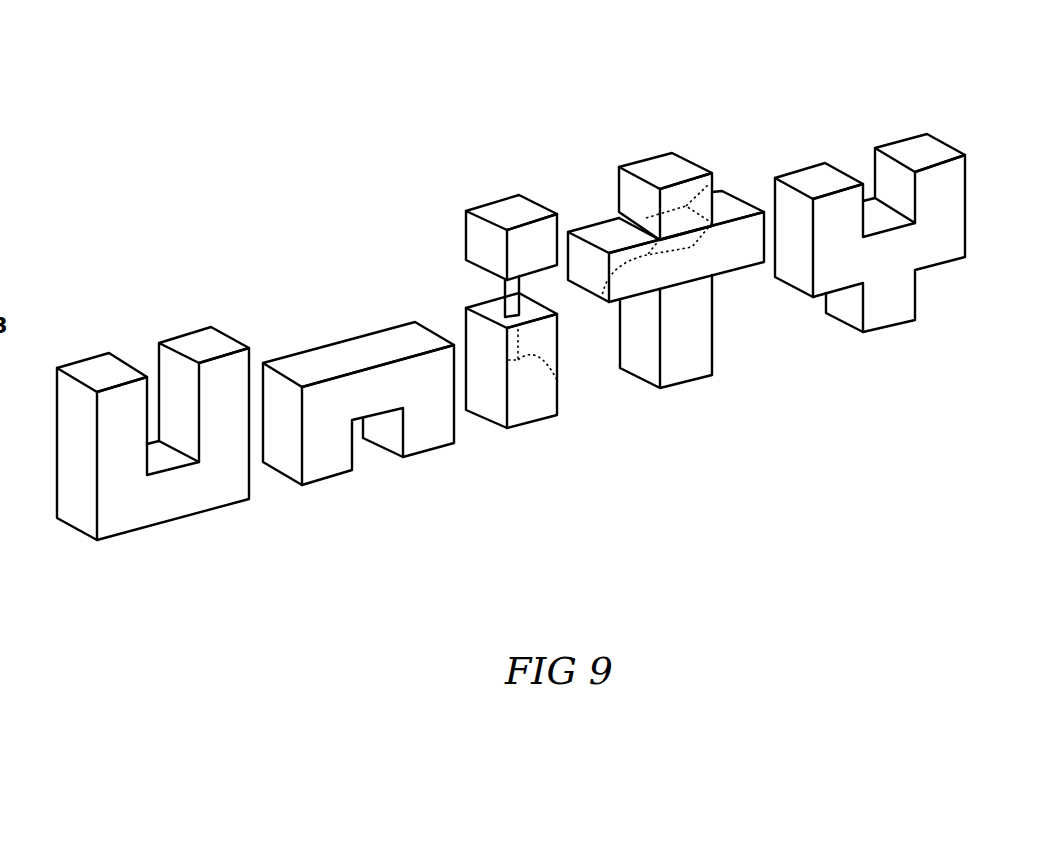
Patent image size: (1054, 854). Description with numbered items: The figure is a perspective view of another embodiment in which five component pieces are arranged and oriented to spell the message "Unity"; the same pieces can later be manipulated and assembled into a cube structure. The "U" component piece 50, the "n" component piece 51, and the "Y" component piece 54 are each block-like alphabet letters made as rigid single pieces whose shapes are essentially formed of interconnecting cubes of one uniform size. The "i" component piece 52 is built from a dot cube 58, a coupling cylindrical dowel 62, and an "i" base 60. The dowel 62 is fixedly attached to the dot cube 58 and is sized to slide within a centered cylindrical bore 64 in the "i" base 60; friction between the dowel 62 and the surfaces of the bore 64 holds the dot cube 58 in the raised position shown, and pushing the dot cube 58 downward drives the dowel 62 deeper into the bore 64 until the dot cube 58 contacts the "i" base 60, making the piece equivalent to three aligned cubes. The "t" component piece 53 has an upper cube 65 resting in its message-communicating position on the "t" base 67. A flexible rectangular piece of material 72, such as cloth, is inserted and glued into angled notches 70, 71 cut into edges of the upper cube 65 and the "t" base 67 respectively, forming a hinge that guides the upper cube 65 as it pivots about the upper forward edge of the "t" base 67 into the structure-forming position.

The "U" component piece 50 is at (98, 373).
The "n" component piece 51 is at (305, 358).
The "i" component piece 52 is at (472, 351).
The "t" component piece 53 is at (677, 311).
The "Y" component piece 54 is at (937, 188).
The dot cube 58 is at (528, 242).
The "i" base 60 is at (498, 413).
The coupling cylindrical dowel 62 is at (505, 295).
The centered cylindrical bore 64 is at (557, 380).
The upper cube 65 is at (667, 165).
The "t" base 67 is at (698, 337).
The angled notch 70 is at (621, 212).
The angled notch 71 is at (602, 297).
The flexible rectangular piece of material 72 is at (712, 187).